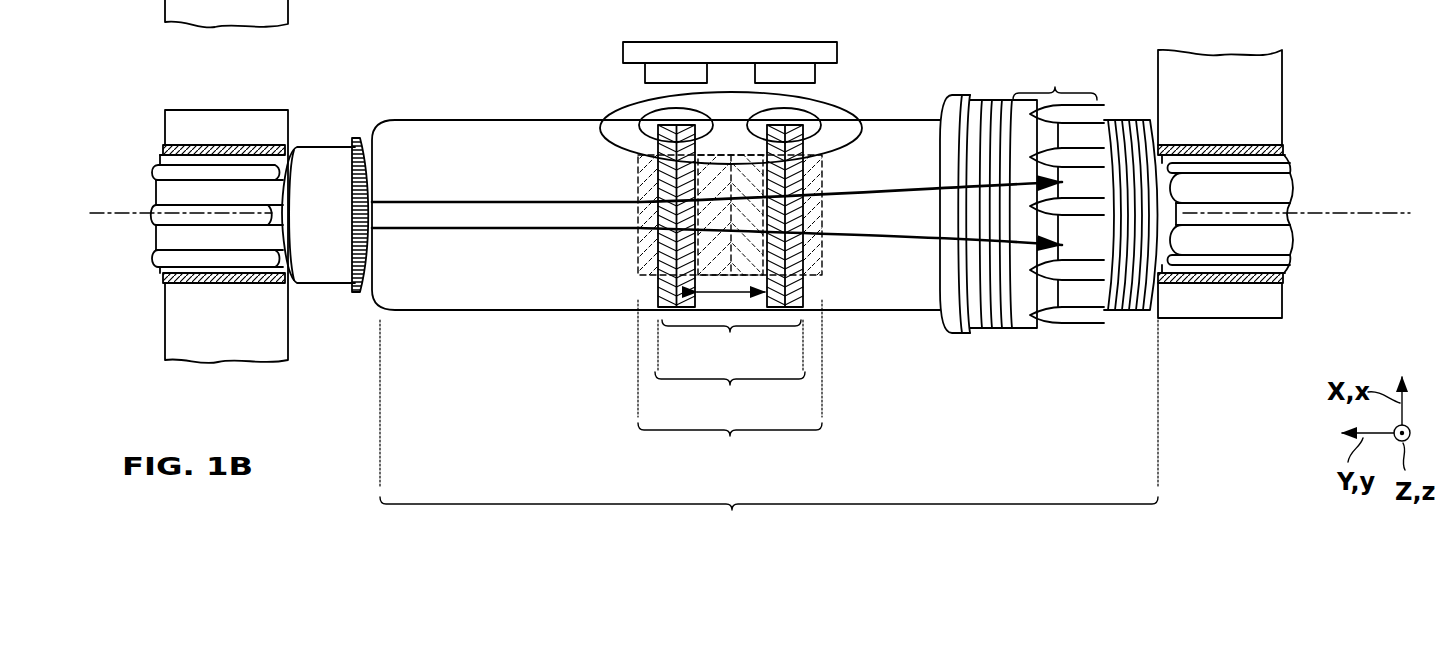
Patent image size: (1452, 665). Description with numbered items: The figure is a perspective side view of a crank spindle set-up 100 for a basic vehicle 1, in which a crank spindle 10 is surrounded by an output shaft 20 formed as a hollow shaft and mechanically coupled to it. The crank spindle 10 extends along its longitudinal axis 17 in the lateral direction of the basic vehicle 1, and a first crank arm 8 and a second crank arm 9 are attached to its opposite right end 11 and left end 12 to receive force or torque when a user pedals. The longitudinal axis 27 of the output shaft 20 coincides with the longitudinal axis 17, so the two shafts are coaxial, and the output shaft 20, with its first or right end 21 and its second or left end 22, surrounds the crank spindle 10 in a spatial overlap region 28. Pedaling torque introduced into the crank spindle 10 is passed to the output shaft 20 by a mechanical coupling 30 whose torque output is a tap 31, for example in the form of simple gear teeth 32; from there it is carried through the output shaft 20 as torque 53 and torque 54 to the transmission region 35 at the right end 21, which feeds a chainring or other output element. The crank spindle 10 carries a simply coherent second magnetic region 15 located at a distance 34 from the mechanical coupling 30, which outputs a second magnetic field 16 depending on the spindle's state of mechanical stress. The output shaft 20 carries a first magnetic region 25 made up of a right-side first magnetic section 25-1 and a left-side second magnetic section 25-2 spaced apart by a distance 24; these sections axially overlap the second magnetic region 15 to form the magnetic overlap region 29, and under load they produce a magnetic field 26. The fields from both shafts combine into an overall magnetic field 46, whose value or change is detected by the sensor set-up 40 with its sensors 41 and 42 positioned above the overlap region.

The basic vehicle 1 is at (769, 484).
The crank spindle set-up 100 is at (769, 484).
The first crank arm 8 is at (1270, 300).
The second crank arm 9 is at (160, 5).
The crank spindle 10 is at (511, 114).
The right end of crank spindle 11 is at (1315, 156).
The left end of crank spindle 12 is at (147, 183).
The second magnetic region 15 is at (730, 277).
The second magnetic field 16 is at (615, 135).
The longitudinal axis of crank spindle 17 is at (745, 249).
The output shaft 20 is at (866, 320).
The first end of output shaft 21 is at (1138, 320).
The second end of output shaft 22 is at (387, 322).
The distance 24 is at (735, 295).
The first magnetic region 25 is at (730, 252).
The first magnetic section 25-1 is at (792, 110).
The second magnetic section 25-2 is at (670, 110).
The magnetic field 26 is at (775, 191).
The longitudinal axis of output shaft 27 is at (92, 214).
The spatial overlap region 28 is at (580, 462).
The magnetic overlap region 29 is at (730, 252).
The mechanical coupling 30 is at (335, 174).
The tap 31 is at (335, 174).
The gear teeth 32 is at (363, 136).
The distance 34 is at (540, 0).
The transmission region 35 is at (1058, 187).
The sensor set-up 40 is at (761, 44).
The sensor 41 is at (663, 75).
The sensor 42 is at (797, 75).
The overall magnetic field 46 is at (775, 191).
The torque 53 is at (437, 231).
The torque 54 is at (440, 198).